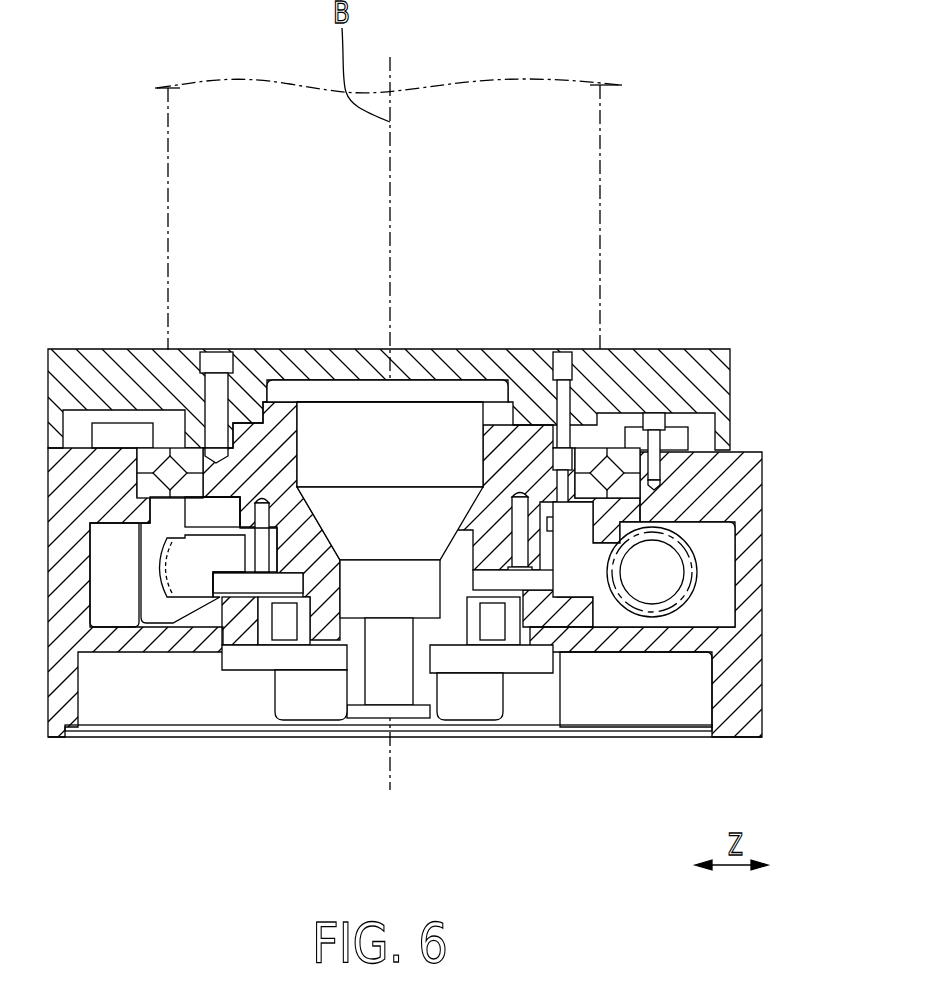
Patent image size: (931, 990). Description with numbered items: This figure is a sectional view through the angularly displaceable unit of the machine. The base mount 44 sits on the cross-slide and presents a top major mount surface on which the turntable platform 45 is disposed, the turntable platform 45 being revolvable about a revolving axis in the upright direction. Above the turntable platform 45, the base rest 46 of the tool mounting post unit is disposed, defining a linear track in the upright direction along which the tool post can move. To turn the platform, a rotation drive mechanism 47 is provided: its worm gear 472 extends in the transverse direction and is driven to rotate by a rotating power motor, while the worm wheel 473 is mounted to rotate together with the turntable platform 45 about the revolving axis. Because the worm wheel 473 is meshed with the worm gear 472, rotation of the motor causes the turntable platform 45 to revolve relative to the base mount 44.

The base mount 44 is at (752, 500).
The turntable platform 45 is at (720, 370).
The base rest 46 is at (592, 197).
The rotation drive mechanism 47 is at (700, 565).
The worm gear 472 is at (662, 585).
The worm wheel 473 is at (583, 585).